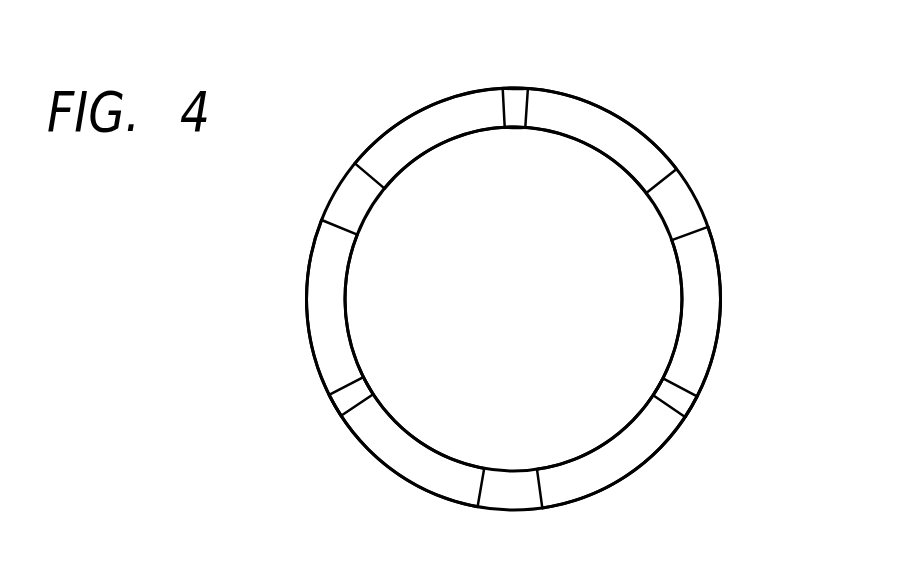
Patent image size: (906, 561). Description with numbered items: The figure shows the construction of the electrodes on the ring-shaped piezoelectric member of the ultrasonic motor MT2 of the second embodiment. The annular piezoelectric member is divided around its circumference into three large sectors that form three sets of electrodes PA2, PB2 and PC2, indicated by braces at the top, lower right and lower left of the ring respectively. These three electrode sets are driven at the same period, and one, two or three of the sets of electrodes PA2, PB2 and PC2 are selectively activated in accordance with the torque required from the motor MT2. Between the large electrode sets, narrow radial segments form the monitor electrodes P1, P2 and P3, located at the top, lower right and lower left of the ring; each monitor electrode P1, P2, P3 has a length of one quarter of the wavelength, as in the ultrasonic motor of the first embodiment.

The ultrasonic motor MT2 is at (696, 158).
The first set of electrodes PA2 is at (610, 70).
The second set of electrodes PB2 is at (728, 351).
The third set of electrodes PC2 is at (292, 346).
The monitor electrode P1 is at (515, 112).
The monitor electrode P2 is at (677, 400).
The monitor electrode P3 is at (353, 392).